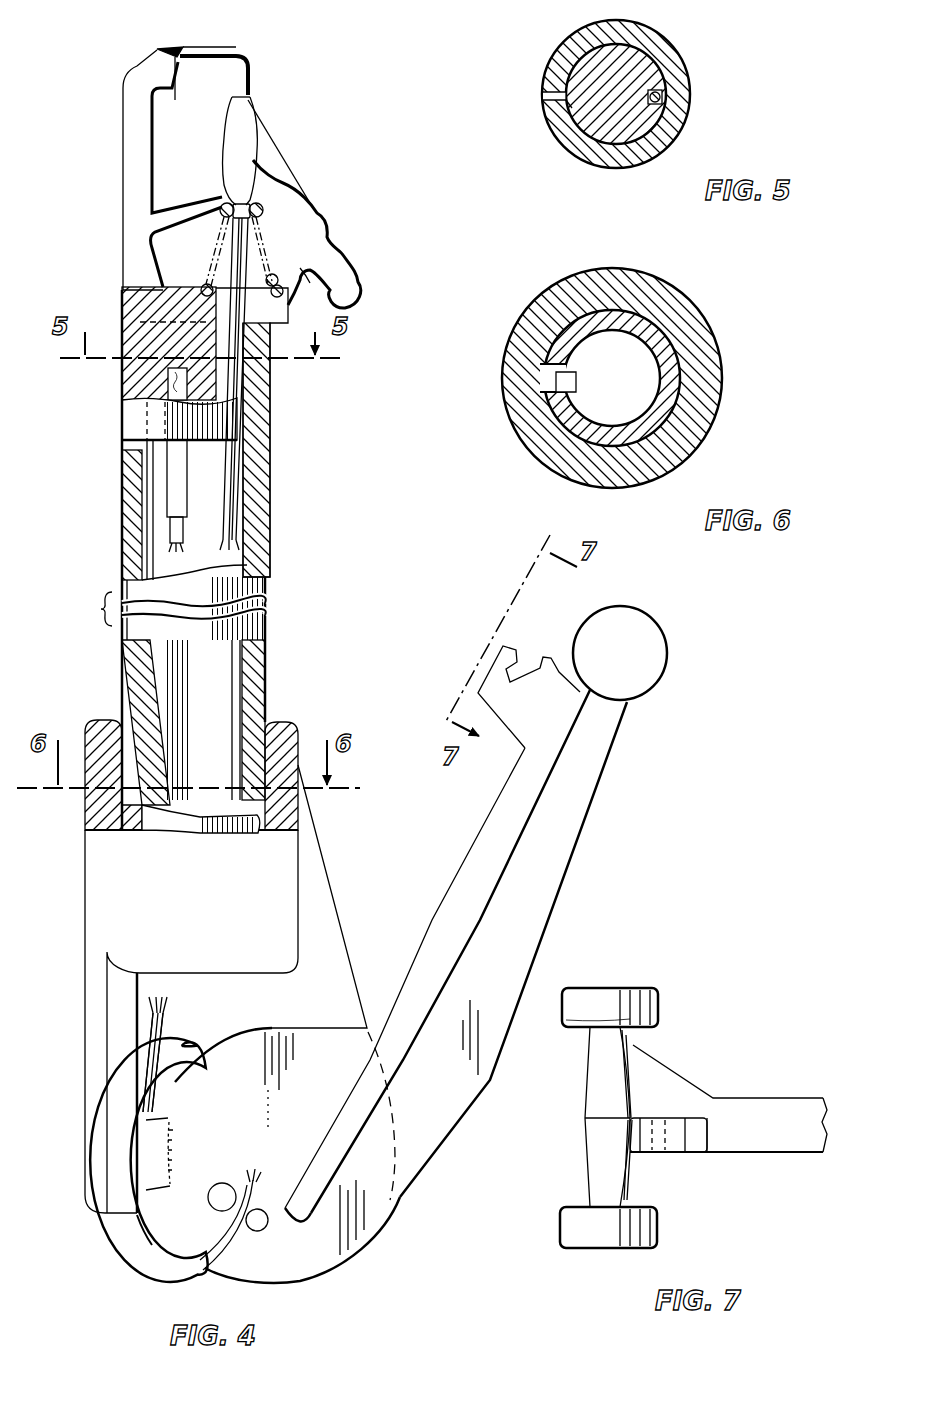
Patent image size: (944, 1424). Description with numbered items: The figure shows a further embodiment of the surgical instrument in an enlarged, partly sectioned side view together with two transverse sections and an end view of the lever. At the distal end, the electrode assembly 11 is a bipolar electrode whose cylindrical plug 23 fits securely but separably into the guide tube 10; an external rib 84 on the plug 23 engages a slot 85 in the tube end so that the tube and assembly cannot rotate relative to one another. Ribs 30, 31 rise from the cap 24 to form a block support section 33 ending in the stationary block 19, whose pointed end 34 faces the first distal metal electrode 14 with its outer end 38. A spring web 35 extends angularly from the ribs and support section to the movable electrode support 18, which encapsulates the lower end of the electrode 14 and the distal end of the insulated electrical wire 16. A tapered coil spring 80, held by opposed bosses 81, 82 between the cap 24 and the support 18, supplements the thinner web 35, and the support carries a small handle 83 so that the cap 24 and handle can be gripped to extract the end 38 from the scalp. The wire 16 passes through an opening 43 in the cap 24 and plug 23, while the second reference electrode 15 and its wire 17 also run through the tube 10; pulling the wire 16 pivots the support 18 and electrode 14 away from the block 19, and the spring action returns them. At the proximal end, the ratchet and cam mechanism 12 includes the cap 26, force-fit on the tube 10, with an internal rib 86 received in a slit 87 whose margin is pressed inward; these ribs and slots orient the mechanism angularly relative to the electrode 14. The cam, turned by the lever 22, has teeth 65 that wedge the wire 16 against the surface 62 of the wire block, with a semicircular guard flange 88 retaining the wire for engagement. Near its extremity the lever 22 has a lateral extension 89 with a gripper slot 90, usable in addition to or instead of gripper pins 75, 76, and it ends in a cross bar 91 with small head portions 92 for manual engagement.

In FIG. 4, the guide tube 10 is at (265, 630).
In FIG. 5, the guide tube 10 is at (565, 55).
In FIG. 6, the guide tube 10 is at (565, 330).
In FIG. 4, the electrode assembly 11 is at (278, 100).
In FIG. 4, the ratchet and cam mechanism 12 is at (120, 1250).
In FIG. 4, the first distal metal electrode 14 is at (245, 58).
In FIG. 4, the second reference electrode 15 is at (167, 482).
In FIG. 4, the insulated electrical wire 16 is at (240, 527).
In FIG. 5, the insulated electrical wire 16 is at (665, 95).
In FIG. 4, the insulated electrical wire 17 is at (170, 527).
In FIG. 4, the movable electrode support 18 is at (228, 138).
In FIG. 4, the stationary block 19 is at (152, 56).
In FIG. 4, the lever 22 is at (552, 848).
In FIG. 7, the lever 22 is at (785, 1140).
In FIG. 4, the plug 23 is at (122, 383).
In FIG. 5, the plug 23 is at (600, 135).
In FIG. 4, the cap 24 is at (300, 288).
In FIG. 4, the cap 26 is at (283, 723).
In FIG. 6, the cap 26 is at (520, 410).
In FIG. 4, the rib 30 is at (128, 245).
In FIG. 4, the rib 31 is at (128, 265).
In FIG. 4, the block support section 33 is at (128, 143).
In FIG. 4, the pointed end 34 is at (180, 58).
In FIG. 4, the spring web 35 is at (215, 200).
In FIG. 4, the outer end 38 is at (205, 50).
In FIG. 5, the opening 43 is at (672, 112).
In FIG. 4, the surface 62 is at (150, 1055).
In FIG. 4, the teeth 65 is at (172, 1140).
In FIG. 4, the gripper pin 75 is at (262, 1231).
In FIG. 4, the gripper pin 76 is at (210, 1190).
In FIG. 4, the tapered coil spring 80 is at (275, 258).
In FIG. 4, the boss 81 is at (248, 207).
In FIG. 4, the boss 82 is at (213, 265).
In FIG. 4, the small handle 83 is at (333, 250).
In FIG. 4, the external rib 84 is at (128, 428).
In FIG. 5, the external rib 84 is at (545, 92).
In FIG. 5, the slot 85 is at (548, 104).
In FIG. 4, the internal rib 86 is at (133, 813).
In FIG. 6, the internal rib 86 is at (553, 375).
In FIG. 4, the slit 87 is at (122, 708).
In FIG. 6, the slit 87 is at (590, 372).
In FIG. 4, the semicircular guard flange 88 is at (170, 1045).
In FIG. 4, the lateral extension 89 is at (490, 690).
In FIG. 7, the lateral extension 89 is at (695, 1155).
In FIG. 4, the gripper slot 90 is at (523, 667).
In FIG. 7, the cross bar 91 is at (596, 1070).
In FIG. 4, the head portions 92 is at (650, 630).
In FIG. 7, the head portions 92 is at (598, 1000).